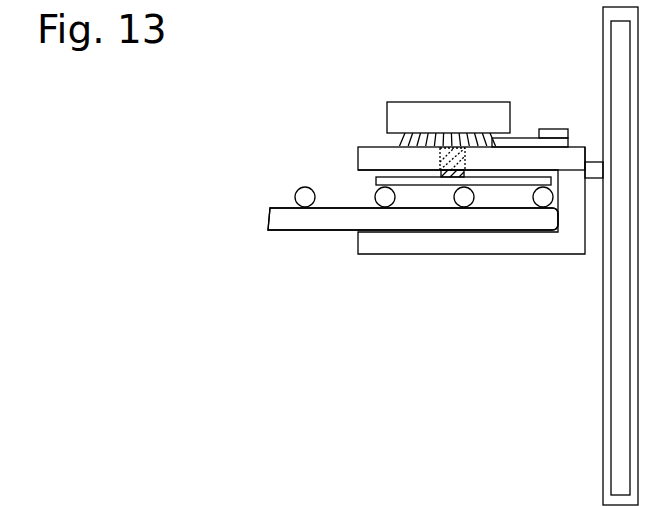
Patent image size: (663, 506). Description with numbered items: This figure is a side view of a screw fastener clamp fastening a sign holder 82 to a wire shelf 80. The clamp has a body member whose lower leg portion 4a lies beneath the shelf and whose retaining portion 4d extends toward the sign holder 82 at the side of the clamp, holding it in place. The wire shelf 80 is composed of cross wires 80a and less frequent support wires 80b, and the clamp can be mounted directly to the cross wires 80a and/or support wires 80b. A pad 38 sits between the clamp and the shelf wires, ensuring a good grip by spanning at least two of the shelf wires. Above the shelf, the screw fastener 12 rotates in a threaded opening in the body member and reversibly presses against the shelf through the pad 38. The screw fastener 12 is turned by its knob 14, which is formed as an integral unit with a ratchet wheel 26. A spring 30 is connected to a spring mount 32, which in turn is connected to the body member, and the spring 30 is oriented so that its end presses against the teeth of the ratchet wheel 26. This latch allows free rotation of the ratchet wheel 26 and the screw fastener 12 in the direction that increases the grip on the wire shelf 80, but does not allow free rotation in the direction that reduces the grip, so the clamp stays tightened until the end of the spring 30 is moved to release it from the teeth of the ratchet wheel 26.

The screw fastener 12 is at (477, 102).
The screw fastener knob 14 is at (402, 120).
The ratchet wheel 26 is at (410, 144).
The spring 30 is at (515, 143).
The spring mount 32 is at (547, 133).
The pad 38 is at (384, 182).
The lower leg portion 4a is at (372, 242).
The retaining portion 4d is at (593, 170).
The wire shelf 80 is at (323, 230).
The cross wires 80a is at (305, 197).
The support wires 80b is at (433, 220).
The sign holder 82 is at (603, 412).